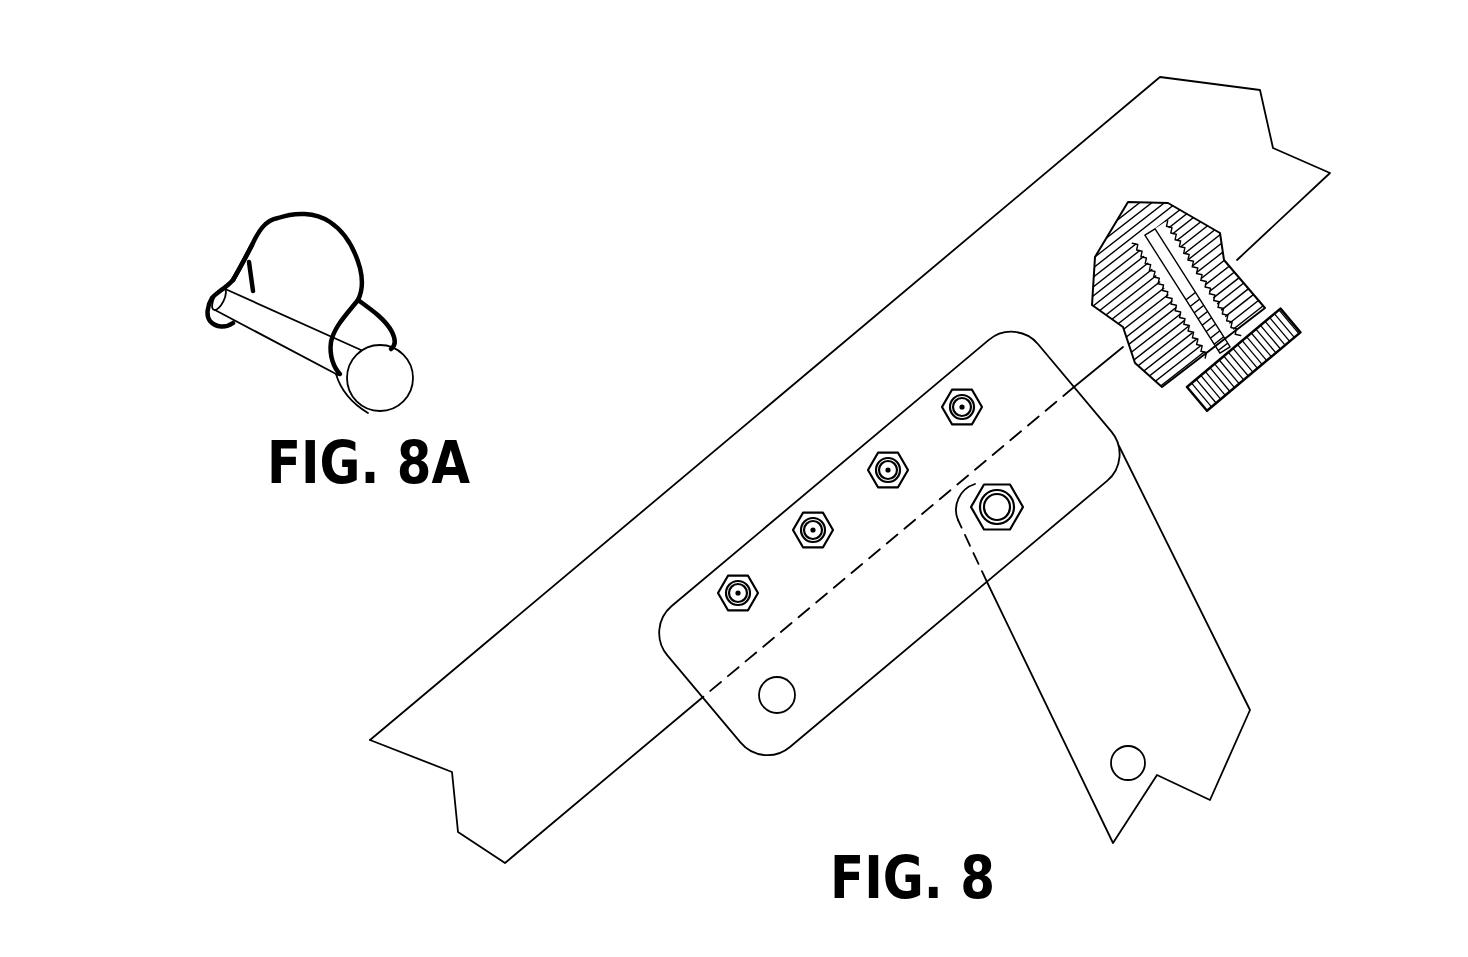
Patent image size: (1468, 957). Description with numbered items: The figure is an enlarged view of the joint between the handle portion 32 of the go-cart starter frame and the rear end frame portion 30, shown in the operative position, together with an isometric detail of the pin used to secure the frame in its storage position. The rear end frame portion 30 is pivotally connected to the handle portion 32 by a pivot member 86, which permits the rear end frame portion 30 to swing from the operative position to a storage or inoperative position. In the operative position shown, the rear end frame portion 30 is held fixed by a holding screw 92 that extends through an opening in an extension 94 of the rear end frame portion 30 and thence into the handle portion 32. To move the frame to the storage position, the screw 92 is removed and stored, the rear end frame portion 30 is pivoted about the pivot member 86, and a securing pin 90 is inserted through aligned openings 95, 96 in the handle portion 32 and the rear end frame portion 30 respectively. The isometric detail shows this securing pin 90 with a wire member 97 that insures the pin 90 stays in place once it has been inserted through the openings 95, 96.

In FIG. 8, the rear end frame portion 30 is at (1173, 635).
In FIG. 8, the handle portion 32 is at (1138, 140).
In FIG. 8, the pivot member 86 is at (997, 507).
In FIG. 8A, the securing pin 90 is at (280, 327).
In FIG. 8, the holding screw 92 is at (1247, 360).
In FIG. 8, the extension 94 is at (1225, 280).
In FIG. 8, the opening in handle portion 95 is at (760, 697).
In FIG. 8, the opening in rear end portion 96 is at (1140, 762).
In FIG. 8A, the wire member 97 is at (345, 236).